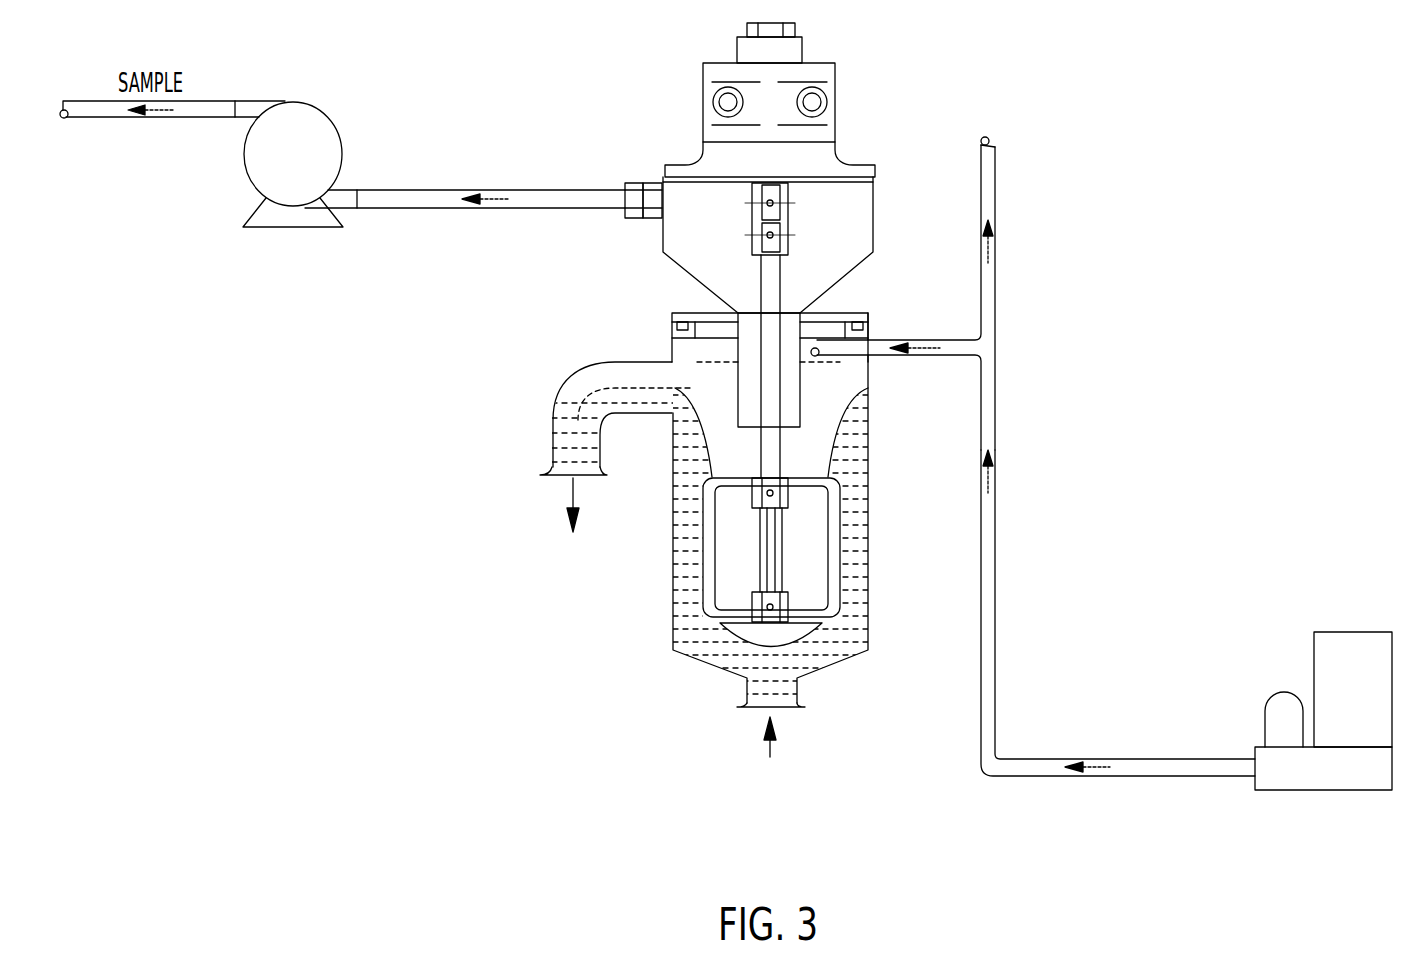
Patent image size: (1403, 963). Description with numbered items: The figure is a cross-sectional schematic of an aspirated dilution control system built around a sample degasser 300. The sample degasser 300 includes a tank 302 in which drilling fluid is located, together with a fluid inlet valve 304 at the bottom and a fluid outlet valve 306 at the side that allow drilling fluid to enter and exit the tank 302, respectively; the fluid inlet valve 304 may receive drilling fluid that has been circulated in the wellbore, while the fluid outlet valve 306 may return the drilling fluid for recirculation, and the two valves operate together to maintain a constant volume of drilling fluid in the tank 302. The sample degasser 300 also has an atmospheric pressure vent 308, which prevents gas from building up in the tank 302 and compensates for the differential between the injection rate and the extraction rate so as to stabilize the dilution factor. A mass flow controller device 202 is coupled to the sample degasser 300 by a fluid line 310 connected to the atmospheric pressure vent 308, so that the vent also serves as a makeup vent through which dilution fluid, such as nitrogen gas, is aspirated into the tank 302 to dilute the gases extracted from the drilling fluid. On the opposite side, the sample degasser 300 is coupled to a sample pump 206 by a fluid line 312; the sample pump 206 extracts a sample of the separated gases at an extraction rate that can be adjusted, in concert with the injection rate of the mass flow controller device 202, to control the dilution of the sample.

The mass flow controller device 202 is at (1255, 790).
The sample pump 206 is at (327, 118).
The sample degasser 300 is at (672, 322).
The tank 302 is at (868, 598).
The fluid inlet valve 304 is at (747, 690).
The fluid outlet valve 306 is at (552, 456).
The atmospheric pressure vent 308 is at (997, 322).
The fluid line 310 is at (995, 716).
The fluid line 312 is at (522, 190).